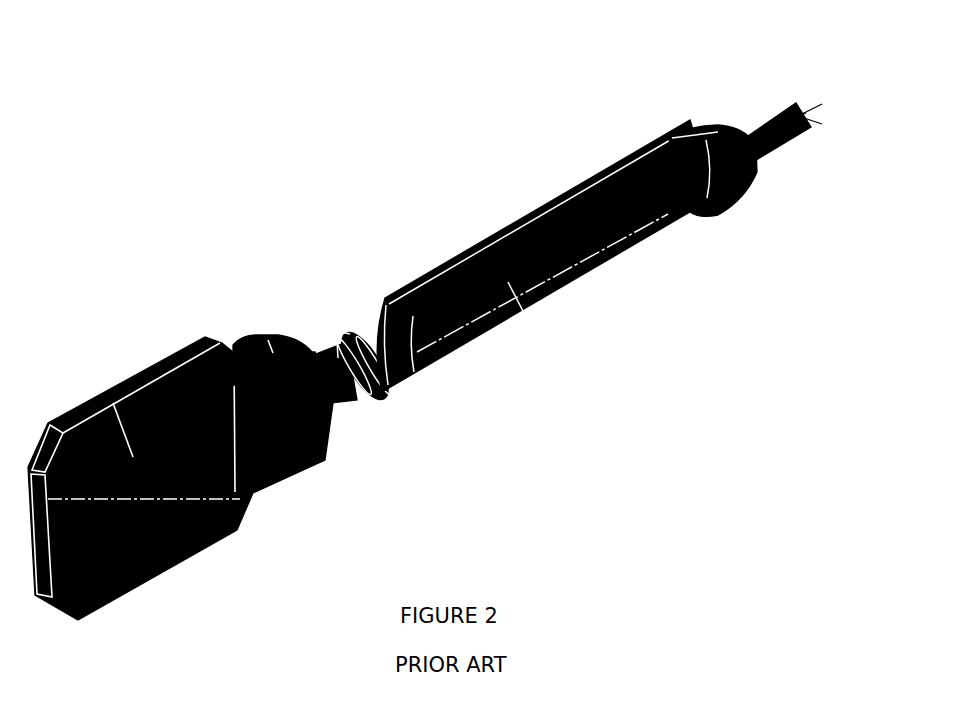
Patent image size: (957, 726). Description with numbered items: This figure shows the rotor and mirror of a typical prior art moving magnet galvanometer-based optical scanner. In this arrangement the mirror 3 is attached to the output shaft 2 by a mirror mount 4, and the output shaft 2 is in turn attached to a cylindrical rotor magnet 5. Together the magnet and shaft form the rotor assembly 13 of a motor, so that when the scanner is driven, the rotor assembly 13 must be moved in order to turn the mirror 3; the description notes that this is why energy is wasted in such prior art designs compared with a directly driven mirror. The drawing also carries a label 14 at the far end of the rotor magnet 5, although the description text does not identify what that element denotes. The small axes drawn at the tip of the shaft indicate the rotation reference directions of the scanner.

The rotor assembly 13 is at (429, 323).
The mirror 3 is at (113, 403).
The mirror mount 4 is at (268, 340).
The output shaft 2 is at (337, 340).
The cylindrical rotor magnet 5 is at (525, 315).
The end cap 14 is at (720, 124).